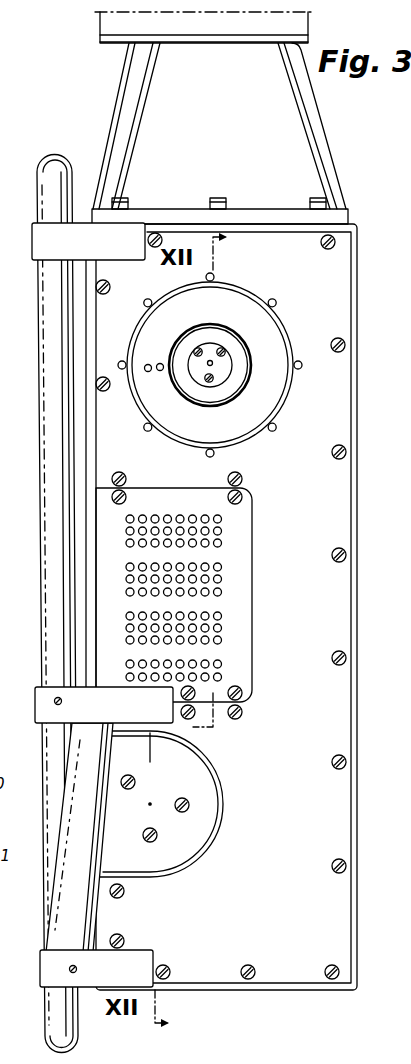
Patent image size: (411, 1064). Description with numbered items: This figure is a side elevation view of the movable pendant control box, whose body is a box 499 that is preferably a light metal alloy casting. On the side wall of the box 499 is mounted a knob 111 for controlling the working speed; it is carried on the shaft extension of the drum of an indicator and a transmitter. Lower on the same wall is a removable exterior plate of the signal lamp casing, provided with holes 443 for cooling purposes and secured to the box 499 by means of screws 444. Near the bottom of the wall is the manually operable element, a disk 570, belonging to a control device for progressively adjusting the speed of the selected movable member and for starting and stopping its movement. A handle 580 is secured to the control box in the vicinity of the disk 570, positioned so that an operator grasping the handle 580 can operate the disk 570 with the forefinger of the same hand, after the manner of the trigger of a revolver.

The knob 111 is at (225, 335).
The screws 444 is at (243, 497).
The holes 443 is at (221, 568).
The box 499 is at (296, 620).
The manually operable element 570 is at (198, 780).
The handle 580 is at (65, 870).